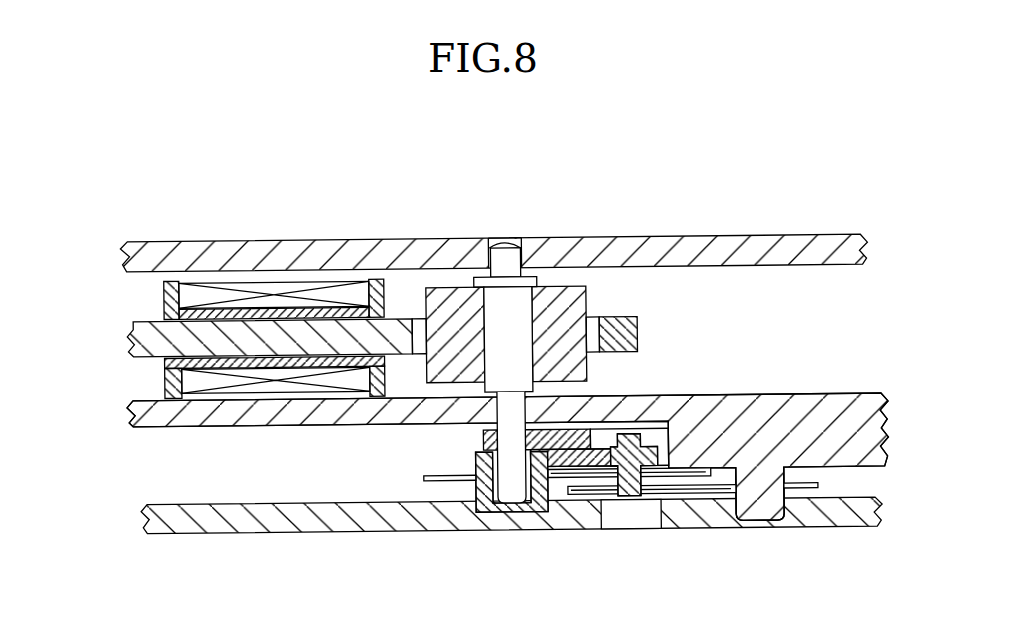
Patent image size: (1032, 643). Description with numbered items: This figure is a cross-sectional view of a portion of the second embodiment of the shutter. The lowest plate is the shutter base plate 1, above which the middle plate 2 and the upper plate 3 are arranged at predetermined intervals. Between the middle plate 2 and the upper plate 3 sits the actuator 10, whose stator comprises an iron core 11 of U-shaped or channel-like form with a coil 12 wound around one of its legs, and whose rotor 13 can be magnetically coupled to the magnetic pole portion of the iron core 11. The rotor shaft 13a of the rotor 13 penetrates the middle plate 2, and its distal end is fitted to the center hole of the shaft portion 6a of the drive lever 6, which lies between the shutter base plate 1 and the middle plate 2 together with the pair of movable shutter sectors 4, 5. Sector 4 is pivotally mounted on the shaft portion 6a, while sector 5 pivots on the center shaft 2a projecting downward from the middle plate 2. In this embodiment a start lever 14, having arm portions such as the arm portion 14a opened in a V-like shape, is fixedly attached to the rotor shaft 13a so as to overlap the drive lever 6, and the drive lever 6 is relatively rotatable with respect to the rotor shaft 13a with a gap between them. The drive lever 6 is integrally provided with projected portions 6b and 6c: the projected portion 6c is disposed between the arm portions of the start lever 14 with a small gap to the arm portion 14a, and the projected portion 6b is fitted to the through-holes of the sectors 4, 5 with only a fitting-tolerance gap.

The shutter base plate 1 is at (233, 525).
The middle plate 2 is at (150, 405).
The center shaft 2a is at (762, 522).
The upper plate 3 is at (160, 246).
The movable shutter sector 4 is at (423, 478).
The movable shutter sector 5 is at (700, 495).
The drive lever 6 is at (596, 456).
The shaft portion 6a is at (475, 462).
The projected portion 6b is at (627, 503).
The projected portion 6c is at (641, 436).
The actuator 10 is at (131, 295).
The iron core 11 is at (128, 338).
The coil 12 is at (185, 378).
The rotor 13 is at (572, 289).
The rotor shaft 13a is at (500, 317).
The start lever 14 is at (483, 434).
The arm portion 14a is at (670, 421).